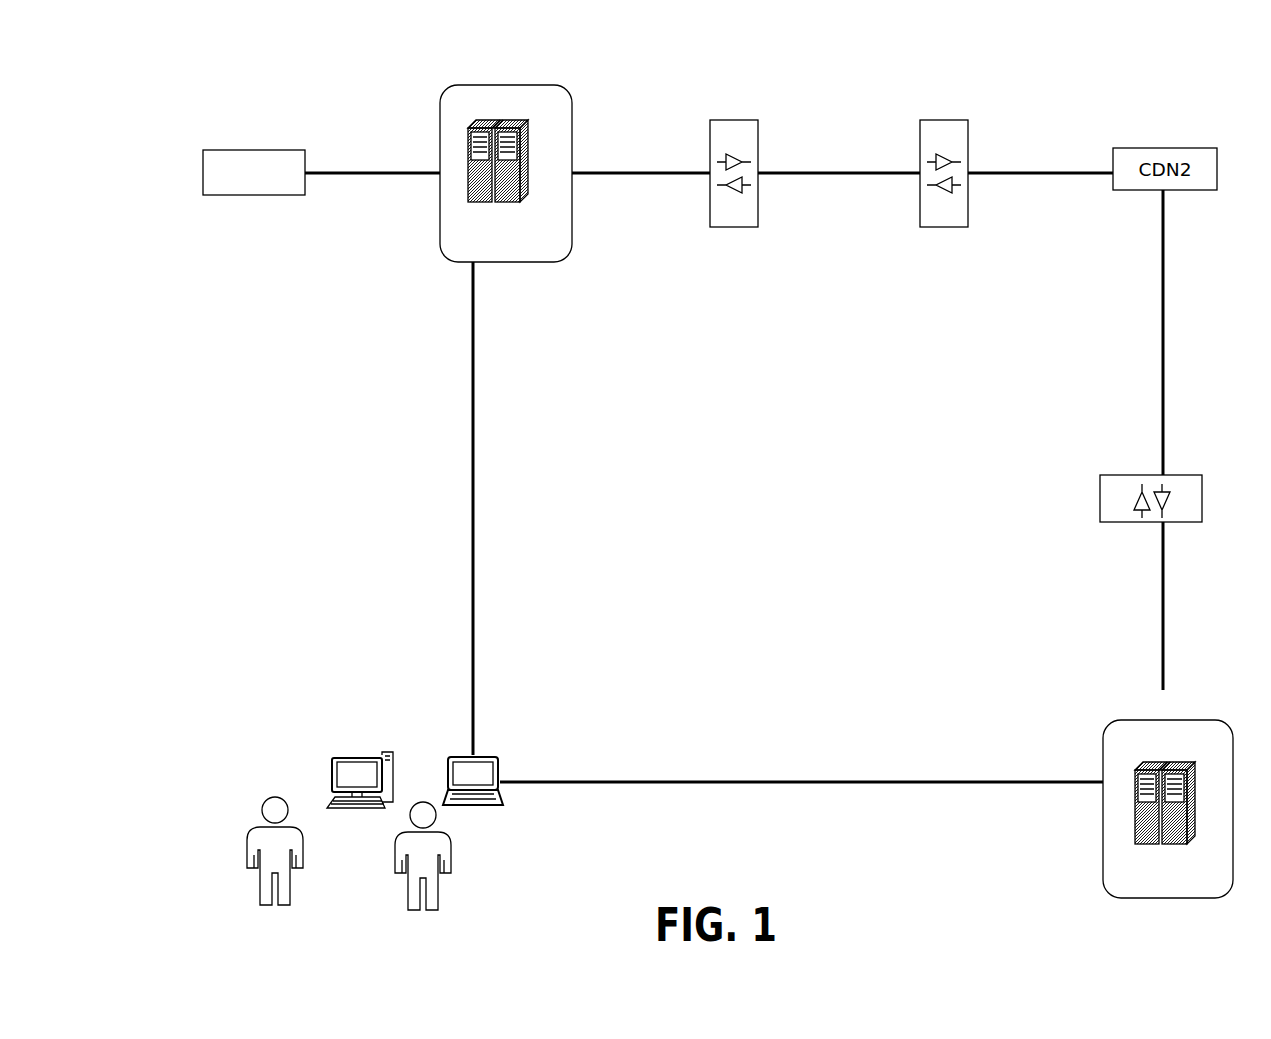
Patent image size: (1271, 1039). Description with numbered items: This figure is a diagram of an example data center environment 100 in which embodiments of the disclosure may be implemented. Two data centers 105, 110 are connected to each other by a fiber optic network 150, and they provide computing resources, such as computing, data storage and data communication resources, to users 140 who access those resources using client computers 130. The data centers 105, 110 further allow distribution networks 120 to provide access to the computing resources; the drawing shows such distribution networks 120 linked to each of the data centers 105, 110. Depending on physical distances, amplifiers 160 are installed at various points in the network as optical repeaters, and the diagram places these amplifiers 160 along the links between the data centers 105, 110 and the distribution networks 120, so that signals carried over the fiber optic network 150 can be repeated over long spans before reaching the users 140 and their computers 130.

The environment 100 is at (324, 75).
The data center 105 is at (507, 160).
The data center 110 is at (1171, 796).
The distribution network 120 is at (202, 150).
The client computer 130 is at (331, 780).
The user 140 is at (262, 820).
The fiber optic network 150 is at (470, 495).
The amplifier 160 is at (732, 120).